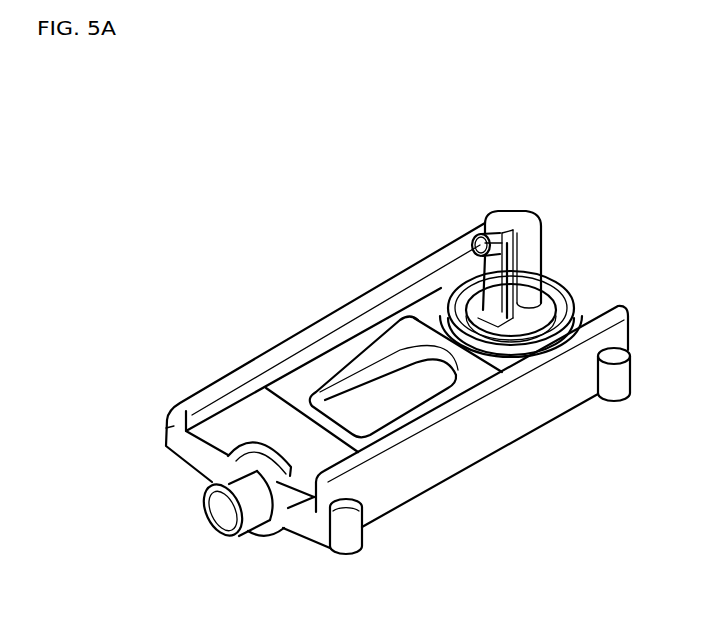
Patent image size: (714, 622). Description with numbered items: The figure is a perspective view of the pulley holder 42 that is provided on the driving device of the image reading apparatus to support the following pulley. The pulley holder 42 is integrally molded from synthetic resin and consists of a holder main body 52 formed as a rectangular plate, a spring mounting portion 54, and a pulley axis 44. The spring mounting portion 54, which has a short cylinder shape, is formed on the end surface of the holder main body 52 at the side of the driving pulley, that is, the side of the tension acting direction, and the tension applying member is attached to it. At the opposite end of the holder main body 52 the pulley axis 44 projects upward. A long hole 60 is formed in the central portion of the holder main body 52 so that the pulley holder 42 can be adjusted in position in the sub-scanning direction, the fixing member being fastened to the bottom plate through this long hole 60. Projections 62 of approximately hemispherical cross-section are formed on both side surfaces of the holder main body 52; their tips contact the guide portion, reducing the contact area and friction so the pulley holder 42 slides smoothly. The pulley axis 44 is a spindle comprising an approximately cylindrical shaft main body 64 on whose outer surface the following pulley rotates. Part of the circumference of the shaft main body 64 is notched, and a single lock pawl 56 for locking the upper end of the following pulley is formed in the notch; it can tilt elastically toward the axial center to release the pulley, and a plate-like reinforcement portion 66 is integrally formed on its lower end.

The pulley holder 42 is at (286, 204).
The pulley axis 44 is at (533, 187).
The holder main body 52 is at (250, 405).
The spring mounting portion 54 is at (212, 512).
The lock pawl 56 is at (487, 233).
The long hole 60 is at (380, 392).
The projections 62 is at (617, 378).
The shaft main body 64 is at (534, 258).
The reinforcement portion 66 is at (508, 300).